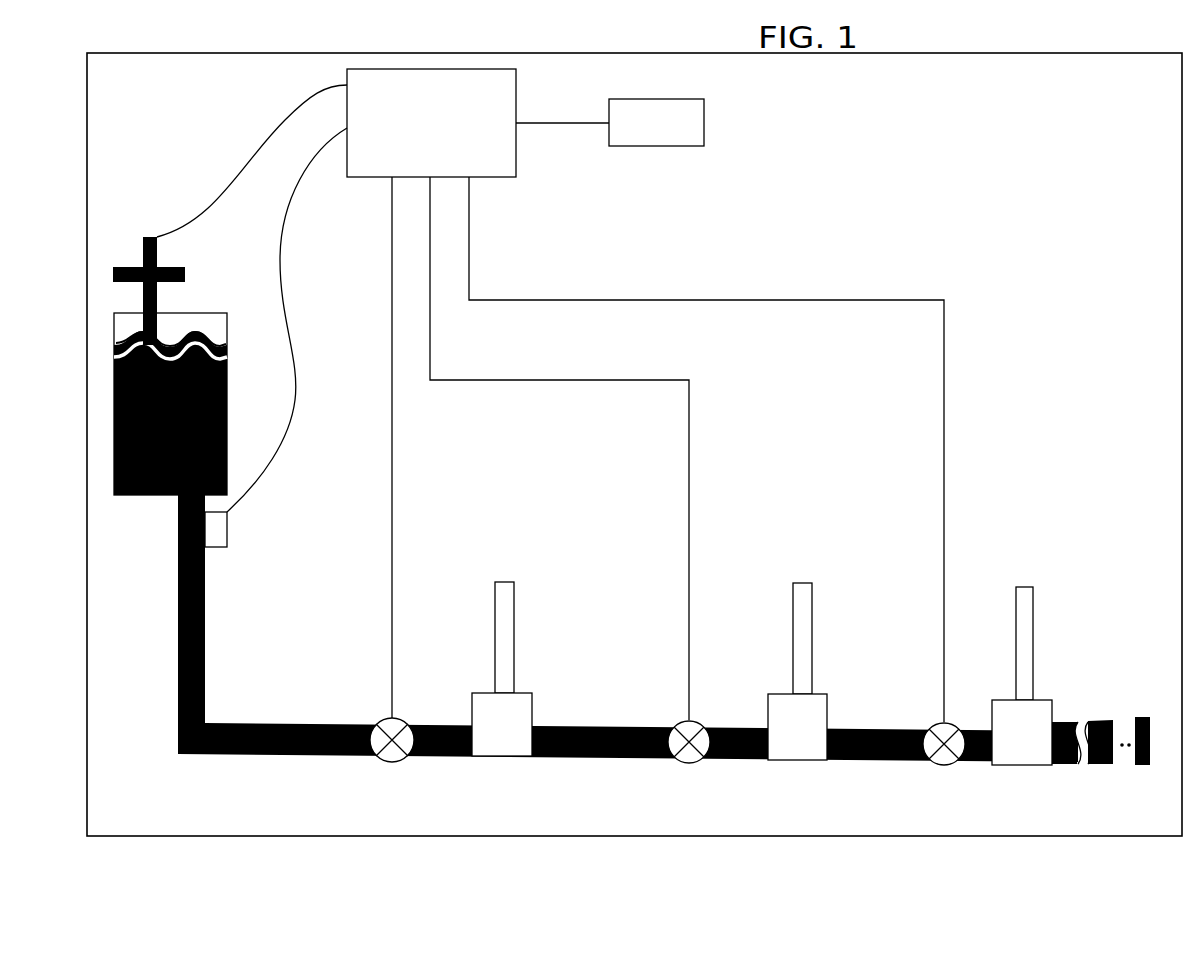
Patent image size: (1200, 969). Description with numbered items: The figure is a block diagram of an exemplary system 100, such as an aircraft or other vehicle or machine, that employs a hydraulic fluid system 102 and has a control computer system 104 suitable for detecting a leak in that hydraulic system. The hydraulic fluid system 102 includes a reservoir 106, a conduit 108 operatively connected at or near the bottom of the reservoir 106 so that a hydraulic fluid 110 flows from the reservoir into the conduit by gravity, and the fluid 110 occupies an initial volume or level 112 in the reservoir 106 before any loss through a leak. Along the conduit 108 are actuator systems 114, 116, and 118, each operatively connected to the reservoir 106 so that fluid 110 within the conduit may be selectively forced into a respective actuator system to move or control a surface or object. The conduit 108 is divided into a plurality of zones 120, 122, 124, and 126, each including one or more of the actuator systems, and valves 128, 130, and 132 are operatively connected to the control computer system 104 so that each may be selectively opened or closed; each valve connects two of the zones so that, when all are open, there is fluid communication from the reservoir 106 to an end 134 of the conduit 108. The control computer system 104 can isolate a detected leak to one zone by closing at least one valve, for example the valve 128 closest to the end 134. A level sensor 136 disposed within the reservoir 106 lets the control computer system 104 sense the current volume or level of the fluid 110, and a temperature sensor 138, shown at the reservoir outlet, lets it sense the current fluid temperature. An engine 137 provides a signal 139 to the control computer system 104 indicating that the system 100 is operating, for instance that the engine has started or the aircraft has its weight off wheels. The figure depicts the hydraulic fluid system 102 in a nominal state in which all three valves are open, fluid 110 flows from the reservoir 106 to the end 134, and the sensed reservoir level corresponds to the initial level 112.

The system 100 is at (1039, 192).
The hydraulic fluid system 102 is at (208, 768).
The control computer system 104 is at (516, 177).
The reservoir 106 is at (127, 497).
The conduit 108 is at (868, 730).
The hydraulic fluid 110 is at (228, 403).
The initial volume or level 112 is at (212, 340).
The actuator system 114 is at (1049, 700).
The actuator system 116 is at (827, 694).
The actuator system 118 is at (532, 693).
The zone 120 is at (954, 770).
The zone 122 is at (944, 770).
The zone 124 is at (393, 766).
The zone 126 is at (244, 567).
The valve 128 is at (947, 769).
The valve 130 is at (692, 768).
The valve 132 is at (374, 760).
The end of the conduit 134 is at (1142, 716).
The level sensor 136 is at (161, 252).
The engine 137 is at (665, 147).
The temperature sensor 138 is at (233, 537).
The signal 139 is at (563, 123).